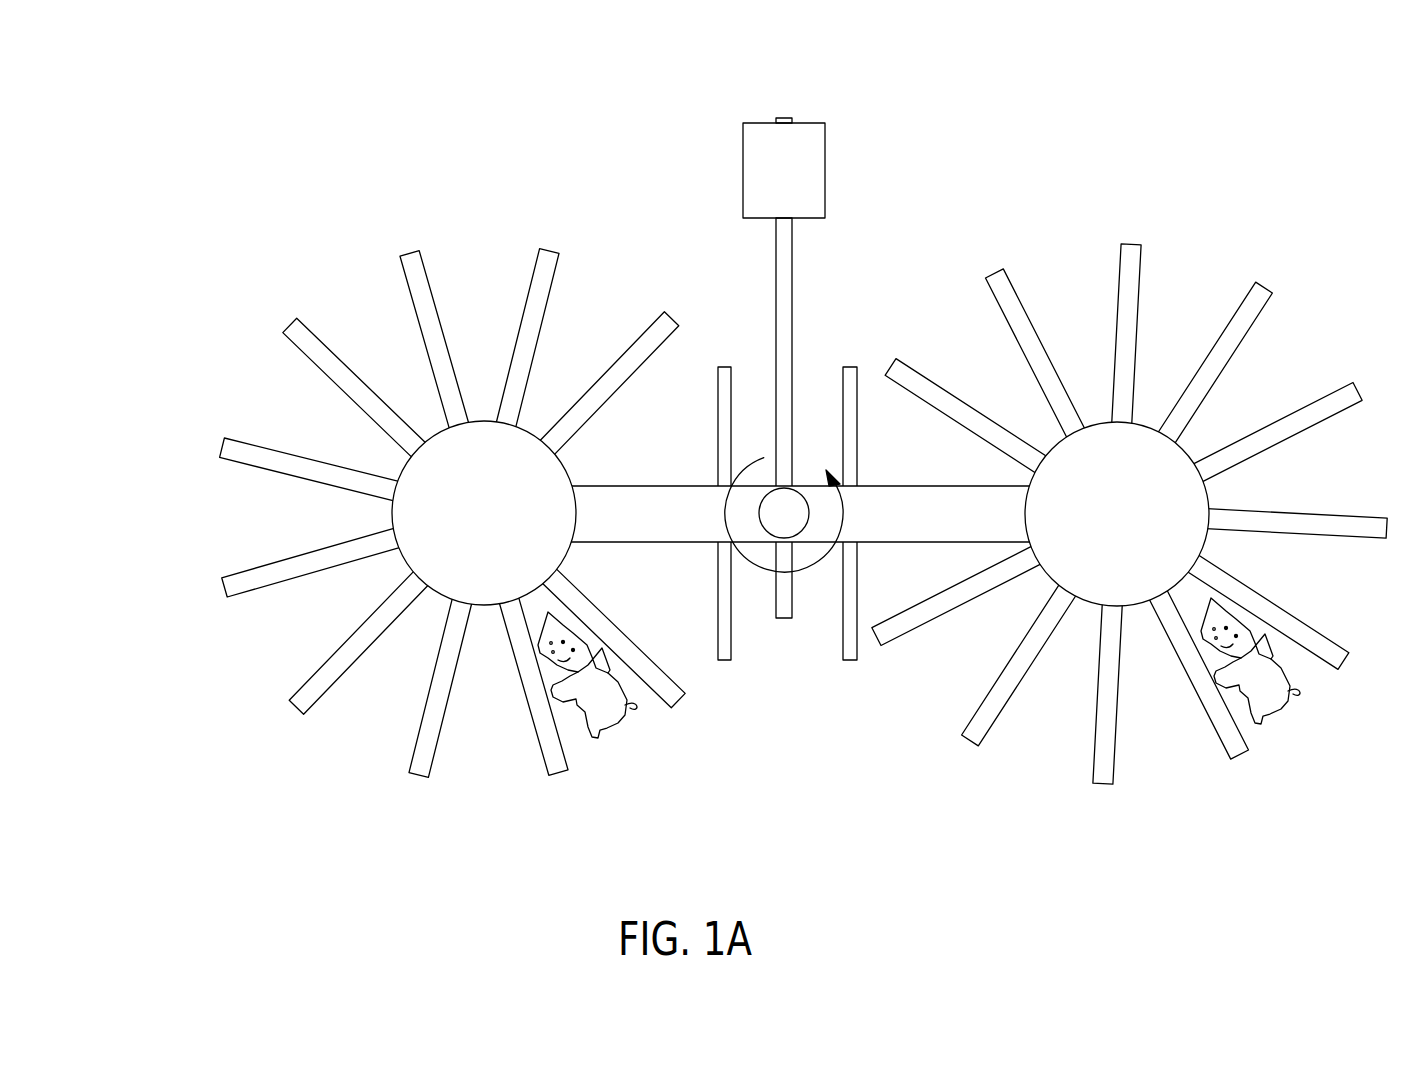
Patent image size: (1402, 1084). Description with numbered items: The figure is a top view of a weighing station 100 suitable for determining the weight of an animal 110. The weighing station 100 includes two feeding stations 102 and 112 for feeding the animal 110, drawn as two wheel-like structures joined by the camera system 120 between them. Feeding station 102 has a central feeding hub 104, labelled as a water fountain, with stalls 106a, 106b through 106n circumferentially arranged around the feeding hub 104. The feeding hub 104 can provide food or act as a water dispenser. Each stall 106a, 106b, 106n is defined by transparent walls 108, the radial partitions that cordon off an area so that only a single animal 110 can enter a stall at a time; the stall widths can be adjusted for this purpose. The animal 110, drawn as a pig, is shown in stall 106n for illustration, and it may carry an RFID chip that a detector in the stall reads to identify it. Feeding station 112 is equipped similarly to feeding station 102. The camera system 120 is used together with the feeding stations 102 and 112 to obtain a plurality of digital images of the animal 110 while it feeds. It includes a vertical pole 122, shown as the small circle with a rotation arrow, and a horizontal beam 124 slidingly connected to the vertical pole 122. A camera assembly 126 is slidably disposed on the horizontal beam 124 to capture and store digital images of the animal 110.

The weighing station 100 is at (78, 120).
The feeding station 102 is at (220, 315).
The central feeding hub 104 is at (400, 466).
The stall 106a is at (625, 270).
The stall 106b is at (470, 212).
The stall 106n is at (670, 760).
The transparent walls 108 is at (549, 250).
The animal 110 is at (606, 728).
The feeding station 112 is at (1255, 215).
The camera system 120 is at (915, 172).
The vertical pole 122 is at (798, 490).
The horizontal beam 124 is at (795, 290).
The camera assembly 126 is at (806, 122).